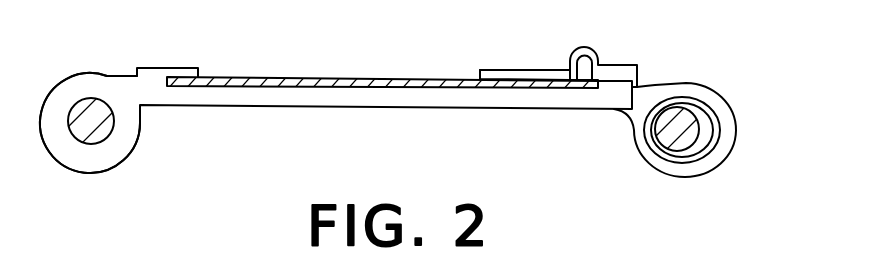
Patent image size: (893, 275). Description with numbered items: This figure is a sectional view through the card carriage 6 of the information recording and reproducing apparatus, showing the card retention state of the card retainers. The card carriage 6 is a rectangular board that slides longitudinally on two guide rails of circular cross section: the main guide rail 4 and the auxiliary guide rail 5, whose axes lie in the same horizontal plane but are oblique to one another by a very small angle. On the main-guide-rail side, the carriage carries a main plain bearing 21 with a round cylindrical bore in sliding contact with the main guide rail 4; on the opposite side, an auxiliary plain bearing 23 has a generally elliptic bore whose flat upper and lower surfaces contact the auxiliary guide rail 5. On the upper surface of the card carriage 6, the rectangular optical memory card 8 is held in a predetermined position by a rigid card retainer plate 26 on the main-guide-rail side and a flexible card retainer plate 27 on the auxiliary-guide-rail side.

The main guide rail 4 is at (85, 110).
The auxiliary guide rail 5 is at (690, 124).
The card carriage 6 is at (360, 105).
The optical memory card 8 is at (330, 78).
The main plain bearing 21 is at (120, 152).
The auxiliary plain bearing 23 is at (683, 83).
The rigid card retainer plate 26 is at (145, 67).
The flexible card retainer plate 27 is at (503, 70).